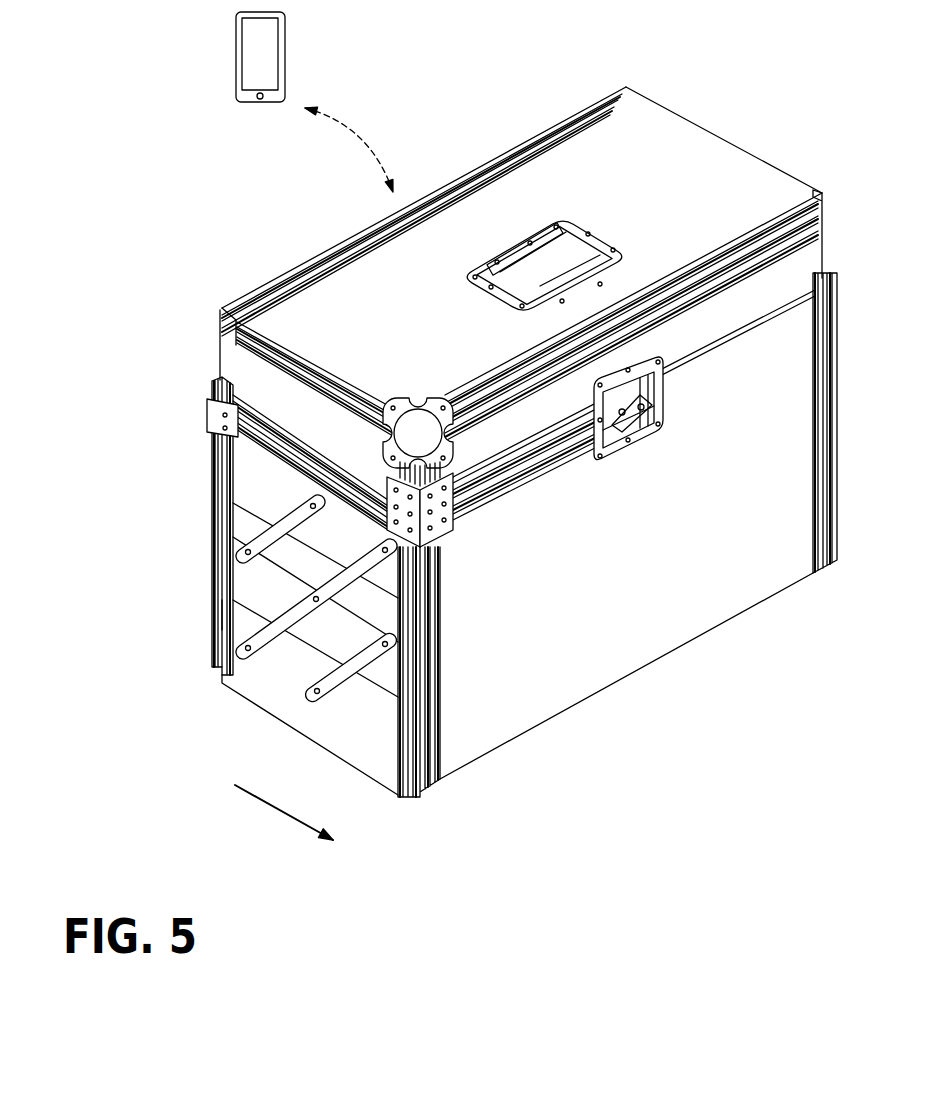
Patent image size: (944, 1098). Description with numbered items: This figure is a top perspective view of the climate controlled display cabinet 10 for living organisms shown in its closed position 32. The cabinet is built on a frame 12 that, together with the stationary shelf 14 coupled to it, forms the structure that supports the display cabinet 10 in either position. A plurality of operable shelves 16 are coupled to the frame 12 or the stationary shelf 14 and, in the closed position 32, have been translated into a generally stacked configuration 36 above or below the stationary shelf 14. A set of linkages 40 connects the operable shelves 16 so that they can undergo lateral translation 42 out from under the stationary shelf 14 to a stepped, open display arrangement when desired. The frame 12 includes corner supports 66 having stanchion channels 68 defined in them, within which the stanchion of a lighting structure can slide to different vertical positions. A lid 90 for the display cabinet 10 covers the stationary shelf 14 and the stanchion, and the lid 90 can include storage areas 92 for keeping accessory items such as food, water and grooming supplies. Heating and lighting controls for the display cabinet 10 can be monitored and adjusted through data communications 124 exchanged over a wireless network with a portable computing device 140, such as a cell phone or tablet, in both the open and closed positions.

The climate controlled display cabinet 10 is at (448, 419).
The frame 12 is at (420, 733).
The stationary shelf 14 is at (268, 481).
The operable shelves 16 is at (265, 578).
The closed position 32 is at (178, 636).
The stacked configuration 36 is at (687, 656).
The linkages 40 is at (262, 640).
The lateral translation 42 is at (277, 810).
The corner supports 66 is at (136, 526).
The stanchion channels 68 is at (212, 614).
The lid 90 is at (541, 234).
The storage areas 92 is at (700, 205).
The data communications 124 is at (333, 117).
The portable computing device 140 is at (244, 106).